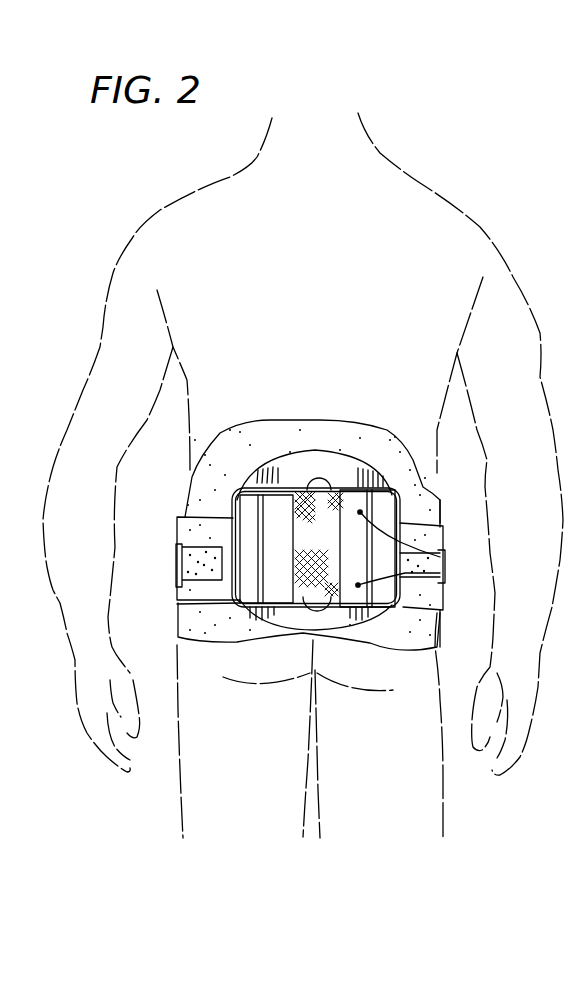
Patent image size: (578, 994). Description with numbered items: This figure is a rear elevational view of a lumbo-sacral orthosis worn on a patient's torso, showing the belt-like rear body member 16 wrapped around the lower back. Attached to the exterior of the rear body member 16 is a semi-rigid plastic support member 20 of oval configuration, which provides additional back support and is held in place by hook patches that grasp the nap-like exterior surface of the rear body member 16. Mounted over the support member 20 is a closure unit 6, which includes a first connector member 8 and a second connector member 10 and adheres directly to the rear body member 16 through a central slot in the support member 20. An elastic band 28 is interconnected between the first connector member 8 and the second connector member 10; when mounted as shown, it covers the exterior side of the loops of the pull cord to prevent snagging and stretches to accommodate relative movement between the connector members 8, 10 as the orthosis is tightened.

The closure unit 6 is at (387, 491).
The first connector member 8 is at (377, 593).
The second connector member 10 is at (250, 585).
The rear body member 16 is at (250, 443).
The semi-rigid plastic support member 20 is at (320, 467).
The elastic band 28 is at (320, 592).